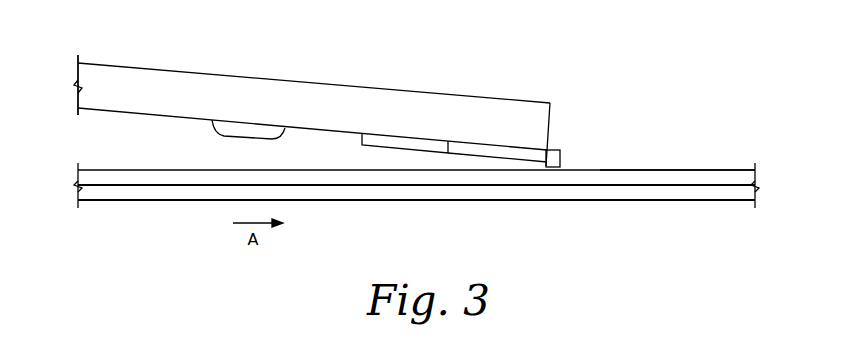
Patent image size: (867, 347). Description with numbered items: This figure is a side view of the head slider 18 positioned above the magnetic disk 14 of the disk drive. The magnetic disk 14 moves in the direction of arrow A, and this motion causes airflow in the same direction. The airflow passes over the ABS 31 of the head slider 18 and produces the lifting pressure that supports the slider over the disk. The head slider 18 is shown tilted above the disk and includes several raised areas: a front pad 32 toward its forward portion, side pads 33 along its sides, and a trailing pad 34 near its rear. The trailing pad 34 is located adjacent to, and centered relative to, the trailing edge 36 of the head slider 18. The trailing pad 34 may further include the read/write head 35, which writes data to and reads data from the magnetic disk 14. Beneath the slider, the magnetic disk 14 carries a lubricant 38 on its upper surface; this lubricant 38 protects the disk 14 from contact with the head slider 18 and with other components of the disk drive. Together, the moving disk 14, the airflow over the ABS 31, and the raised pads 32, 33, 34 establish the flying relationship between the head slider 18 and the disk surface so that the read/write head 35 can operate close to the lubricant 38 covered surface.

The magnetic disk 14 is at (145, 203).
The head slider 18 is at (274, 83).
The ABS 31 is at (110, 157).
The front pad 32 is at (222, 128).
The side pads 33 is at (362, 140).
The trailing pad 34 is at (493, 152).
The read/write head 35 is at (562, 155).
The trailing edge 36 is at (560, 112).
The lubricant 38 is at (705, 170).